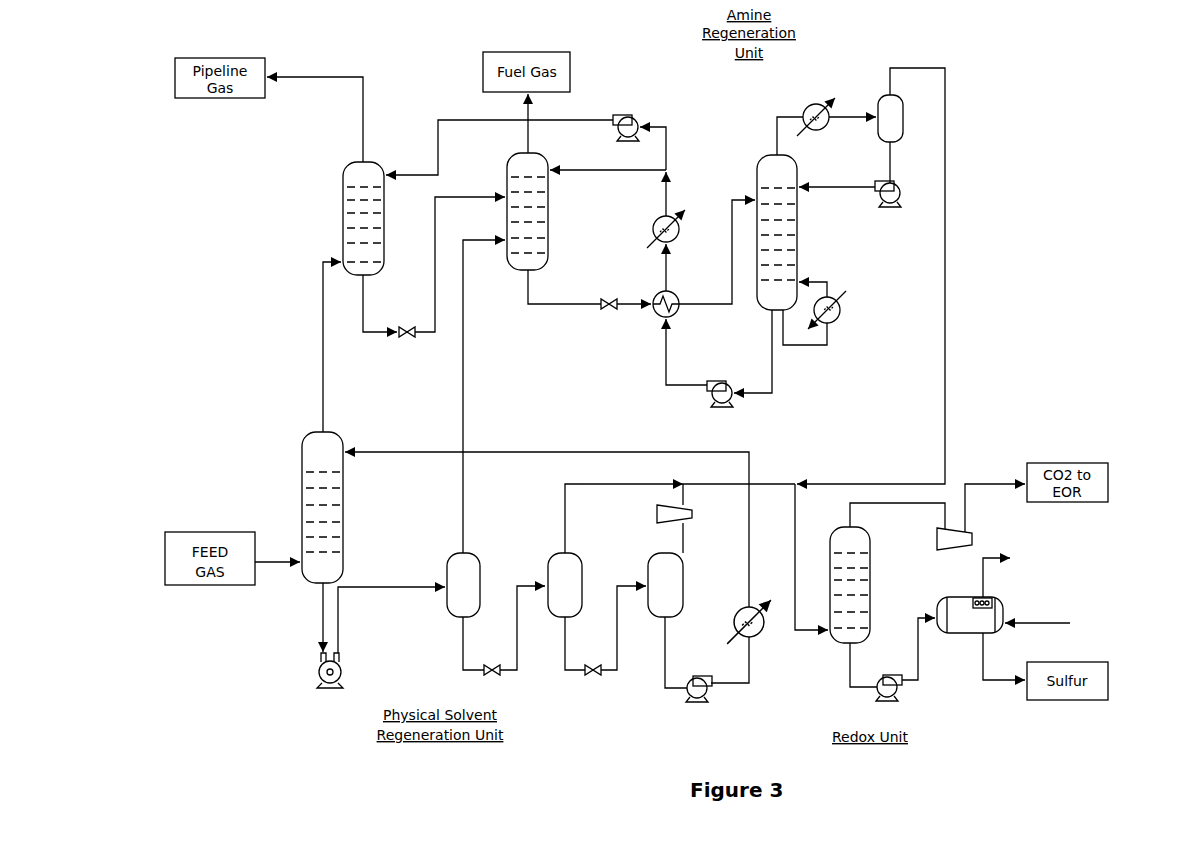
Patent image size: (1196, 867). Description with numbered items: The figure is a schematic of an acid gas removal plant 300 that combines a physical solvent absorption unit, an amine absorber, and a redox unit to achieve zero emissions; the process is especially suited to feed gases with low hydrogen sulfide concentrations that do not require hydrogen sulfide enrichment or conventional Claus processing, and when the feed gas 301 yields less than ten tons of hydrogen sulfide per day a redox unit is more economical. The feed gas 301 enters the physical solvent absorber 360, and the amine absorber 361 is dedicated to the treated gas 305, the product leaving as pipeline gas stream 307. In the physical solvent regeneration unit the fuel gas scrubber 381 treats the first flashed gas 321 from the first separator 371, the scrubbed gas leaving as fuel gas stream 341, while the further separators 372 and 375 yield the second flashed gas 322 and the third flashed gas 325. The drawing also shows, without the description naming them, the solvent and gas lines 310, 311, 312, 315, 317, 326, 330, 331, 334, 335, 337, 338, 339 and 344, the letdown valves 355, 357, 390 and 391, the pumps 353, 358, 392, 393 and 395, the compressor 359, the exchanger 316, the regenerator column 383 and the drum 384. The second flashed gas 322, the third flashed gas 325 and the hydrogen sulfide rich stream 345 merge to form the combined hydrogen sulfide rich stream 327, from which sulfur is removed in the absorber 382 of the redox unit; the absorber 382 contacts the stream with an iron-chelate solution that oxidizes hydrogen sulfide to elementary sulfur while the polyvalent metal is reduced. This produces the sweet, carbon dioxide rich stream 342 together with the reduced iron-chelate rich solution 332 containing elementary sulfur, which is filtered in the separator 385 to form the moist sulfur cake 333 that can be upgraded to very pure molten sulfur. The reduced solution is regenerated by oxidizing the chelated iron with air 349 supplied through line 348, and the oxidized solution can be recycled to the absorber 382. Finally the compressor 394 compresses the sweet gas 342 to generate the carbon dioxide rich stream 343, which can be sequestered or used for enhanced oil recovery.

The gas treatment system 300 is at (1106, 84).
The feed gas 301 is at (288, 558).
The treated gas 305 is at (323, 340).
The pipeline gas line 307 is at (343, 72).
The rich physical solvent line 310 is at (320, 630).
The first flash solvent line 311 is at (463, 652).
The second flash solvent line 312 is at (565, 652).
The lean physical solvent line 315 is at (675, 690).
The solvent cooler 316 is at (750, 680).
The lean solvent return line 317 is at (410, 450).
The first flashed gas 321 is at (463, 506).
The second flashed gas 322 is at (587, 484).
The third flashed gas 325 is at (668, 548).
The acid gas line 326 is at (690, 484).
The combined hydrogen sulfide rich stream 327 is at (795, 553).
The rich amine line 330 is at (363, 300).
The flashed rich amine line 331 is at (550, 308).
The iron-chelate rich solution 332 is at (850, 675).
The moist sulfur cake 333 is at (1021, 678).
The reflux line 334 is at (888, 165).
The lean amine line 335 is at (773, 393).
The lean amine feed line 337 is at (597, 165).
The cooled lean amine line 338 is at (668, 120).
The lean amine recycle line 339 is at (438, 120).
The fuel gas line 341 is at (522, 148).
The carbon dioxide rich stream 342 is at (908, 503).
The carbon dioxide rich stream 343 is at (987, 473).
The regenerator overhead line 344 is at (776, 115).
The hydrogen sulfide rich stream 345 is at (948, 233).
The air line 348 is at (1053, 623).
The air 349 is at (1012, 556).
The solvent pump 353 is at (343, 656).
The first flash valve 355 is at (498, 672).
The second flash valve 357 is at (598, 672).
The lean solvent pump 358 is at (702, 698).
The flash gas compressor 359 is at (657, 506).
The physical solvent absorber 360 is at (300, 490).
The amine absorber 361 is at (385, 217).
The first separator 371 is at (480, 560).
The second flash vessel 372 is at (582, 560).
The third flash vessel 375 is at (684, 577).
The fuel gas scrubber 381 is at (550, 203).
The absorber 382 is at (872, 575).
The amine regenerator 383 is at (757, 173).
The reflux drum 384 is at (901, 138).
The separator 385 is at (1005, 600).
The rich amine letdown valve 390 is at (412, 335).
The flashed amine letdown valve 391 is at (611, 300).
The lean amine pump 392 is at (727, 380).
The amine recycle pump 393 is at (628, 110).
The compressor 394 is at (898, 200).
The redox solution pump 395 is at (889, 701).